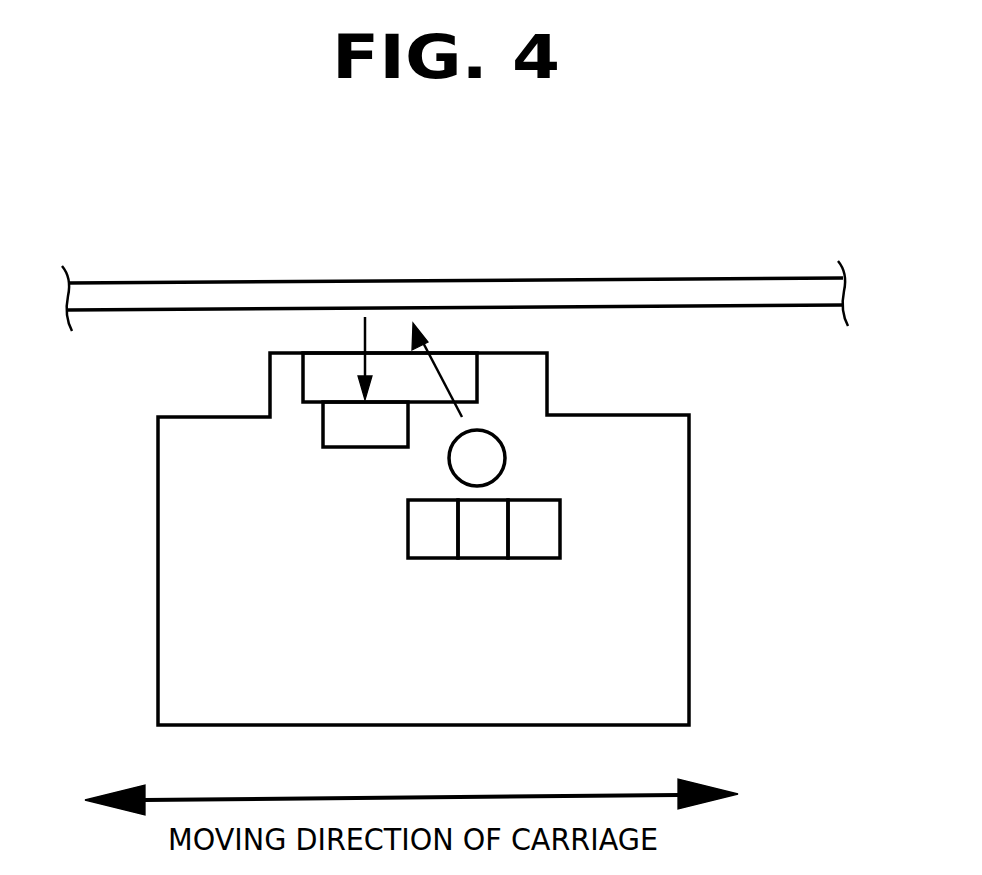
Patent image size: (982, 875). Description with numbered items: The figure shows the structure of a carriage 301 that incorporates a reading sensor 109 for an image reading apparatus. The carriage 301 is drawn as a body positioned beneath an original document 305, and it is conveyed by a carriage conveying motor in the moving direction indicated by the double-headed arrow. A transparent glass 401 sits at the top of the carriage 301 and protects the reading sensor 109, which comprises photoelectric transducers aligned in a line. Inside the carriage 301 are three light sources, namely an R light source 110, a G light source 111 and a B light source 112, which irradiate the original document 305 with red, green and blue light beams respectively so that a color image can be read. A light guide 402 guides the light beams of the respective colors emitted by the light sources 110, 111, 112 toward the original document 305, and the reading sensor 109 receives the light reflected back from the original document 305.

The original document 305 is at (600, 278).
The carriage 301 is at (689, 487).
The transparent glass 401 is at (303, 378).
The reading sensor 109 is at (343, 447).
The light guide 402 is at (505, 458).
The R light source 110 is at (433, 558).
The G light source 111 is at (483, 558).
The B light source 112 is at (533, 558).